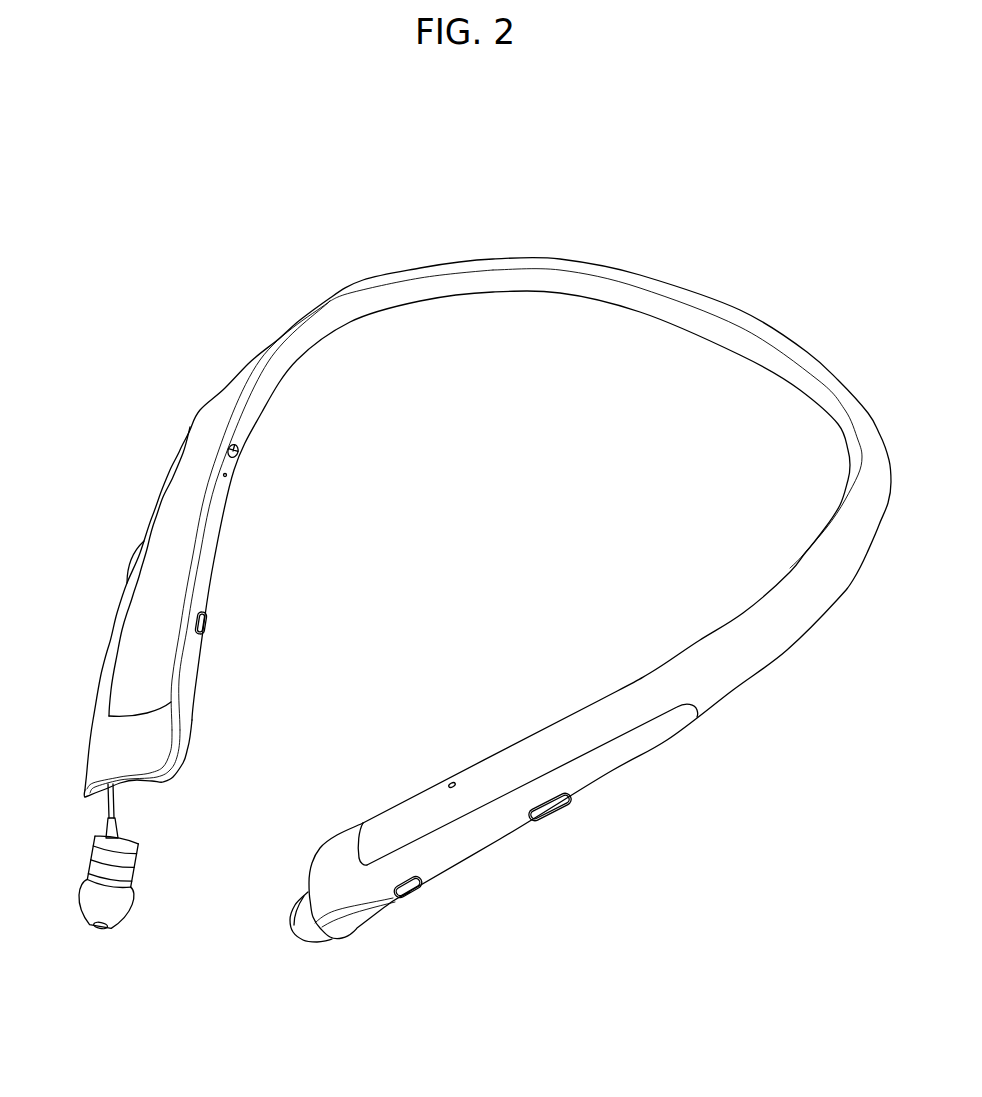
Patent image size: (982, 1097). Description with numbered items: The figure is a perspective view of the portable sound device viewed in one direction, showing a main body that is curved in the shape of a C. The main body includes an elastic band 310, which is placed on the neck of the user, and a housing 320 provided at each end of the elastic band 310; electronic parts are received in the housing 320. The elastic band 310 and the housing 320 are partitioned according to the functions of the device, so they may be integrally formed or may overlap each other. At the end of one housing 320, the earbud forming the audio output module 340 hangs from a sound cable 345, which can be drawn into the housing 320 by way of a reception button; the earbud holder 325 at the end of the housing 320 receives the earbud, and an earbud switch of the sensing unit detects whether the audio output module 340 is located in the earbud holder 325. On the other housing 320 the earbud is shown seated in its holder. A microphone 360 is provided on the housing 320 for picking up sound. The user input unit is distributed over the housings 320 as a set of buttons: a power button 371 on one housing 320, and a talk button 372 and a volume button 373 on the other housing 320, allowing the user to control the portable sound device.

The elastic band 310 is at (507, 281).
The housing 320 is at (187, 560).
The earbud holder 325 is at (140, 784).
The audio output module 340 is at (123, 911).
The sound cable 345 is at (107, 805).
The microphone 360 is at (452, 782).
The power button 371 is at (205, 624).
The talk button 372 is at (409, 889).
The volume button 373 is at (551, 809).